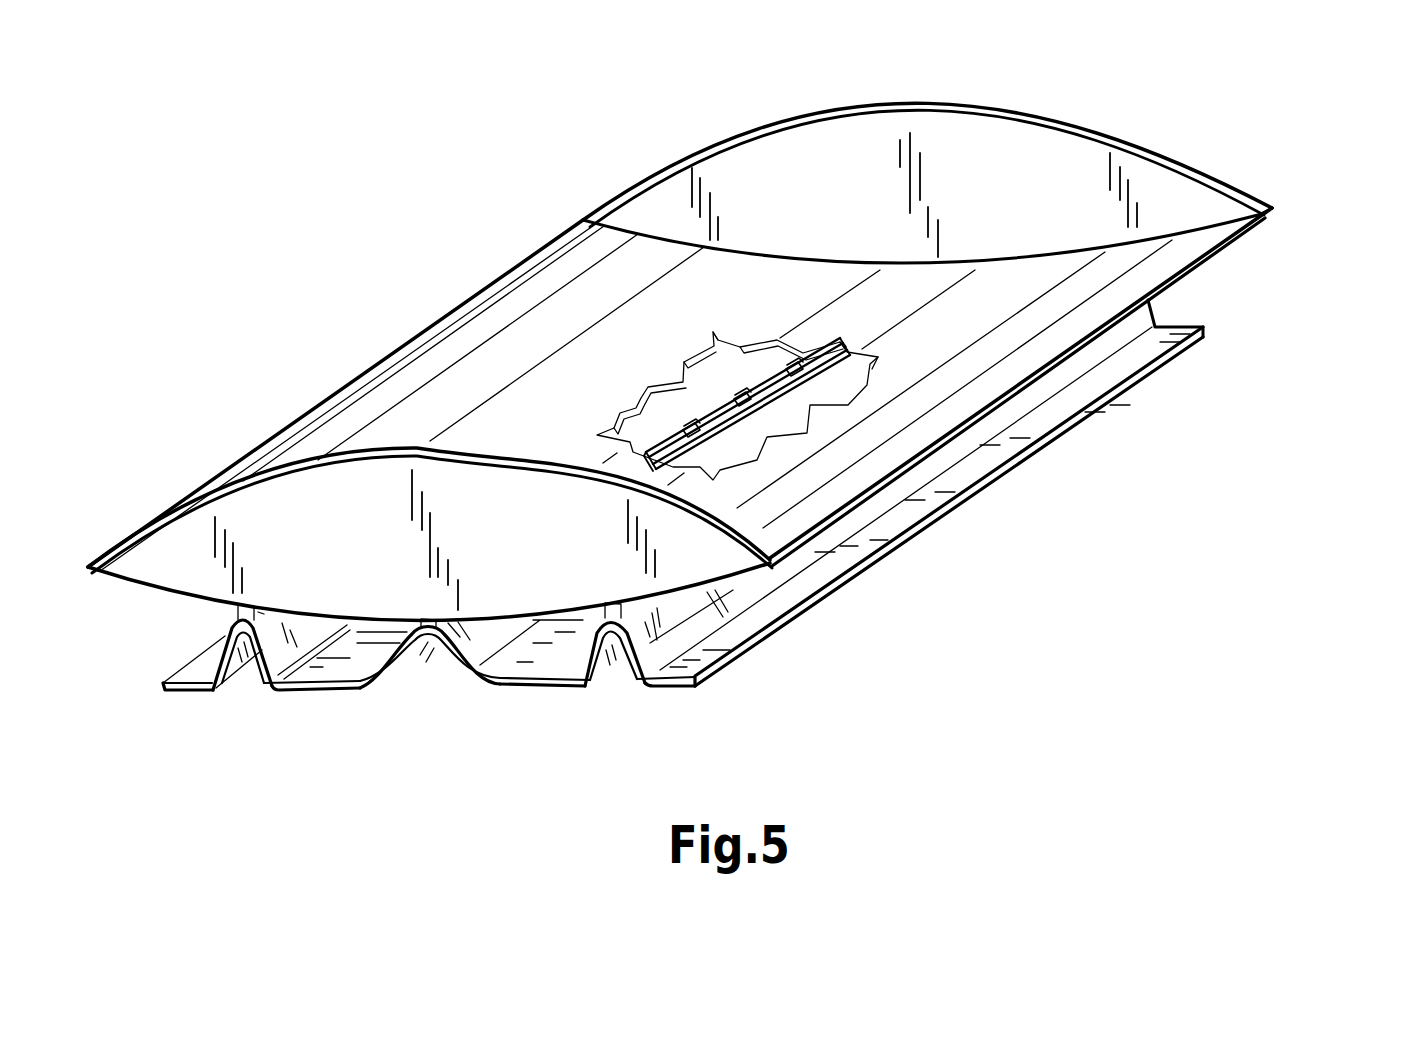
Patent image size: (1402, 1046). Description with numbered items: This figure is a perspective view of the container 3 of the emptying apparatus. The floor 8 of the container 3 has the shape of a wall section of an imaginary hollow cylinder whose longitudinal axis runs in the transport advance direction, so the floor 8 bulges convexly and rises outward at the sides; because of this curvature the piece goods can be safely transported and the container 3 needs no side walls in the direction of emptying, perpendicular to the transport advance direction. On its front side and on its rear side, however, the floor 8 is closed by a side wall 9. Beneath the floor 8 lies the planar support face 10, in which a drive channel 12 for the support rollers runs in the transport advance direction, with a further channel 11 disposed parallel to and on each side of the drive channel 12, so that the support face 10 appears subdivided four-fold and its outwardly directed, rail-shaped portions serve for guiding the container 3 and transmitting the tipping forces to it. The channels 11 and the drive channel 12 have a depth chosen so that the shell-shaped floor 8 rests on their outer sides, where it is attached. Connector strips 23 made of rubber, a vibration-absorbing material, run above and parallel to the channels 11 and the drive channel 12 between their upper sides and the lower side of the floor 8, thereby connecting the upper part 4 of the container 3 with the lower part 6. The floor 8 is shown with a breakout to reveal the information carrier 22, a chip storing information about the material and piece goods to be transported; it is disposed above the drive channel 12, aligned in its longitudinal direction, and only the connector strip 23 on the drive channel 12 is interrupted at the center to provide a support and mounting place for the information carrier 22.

The container 3 is at (741, 444).
The upper part 4 is at (1172, 252).
The lower part 6 is at (548, 688).
The floor 8 is at (1255, 236).
The side wall 9 is at (157, 570).
The support face 10 is at (683, 542).
The channel 11 is at (250, 650).
The drive channel 12 is at (423, 650).
The information carrier 22 is at (726, 366).
The connector strip 23 is at (772, 365).